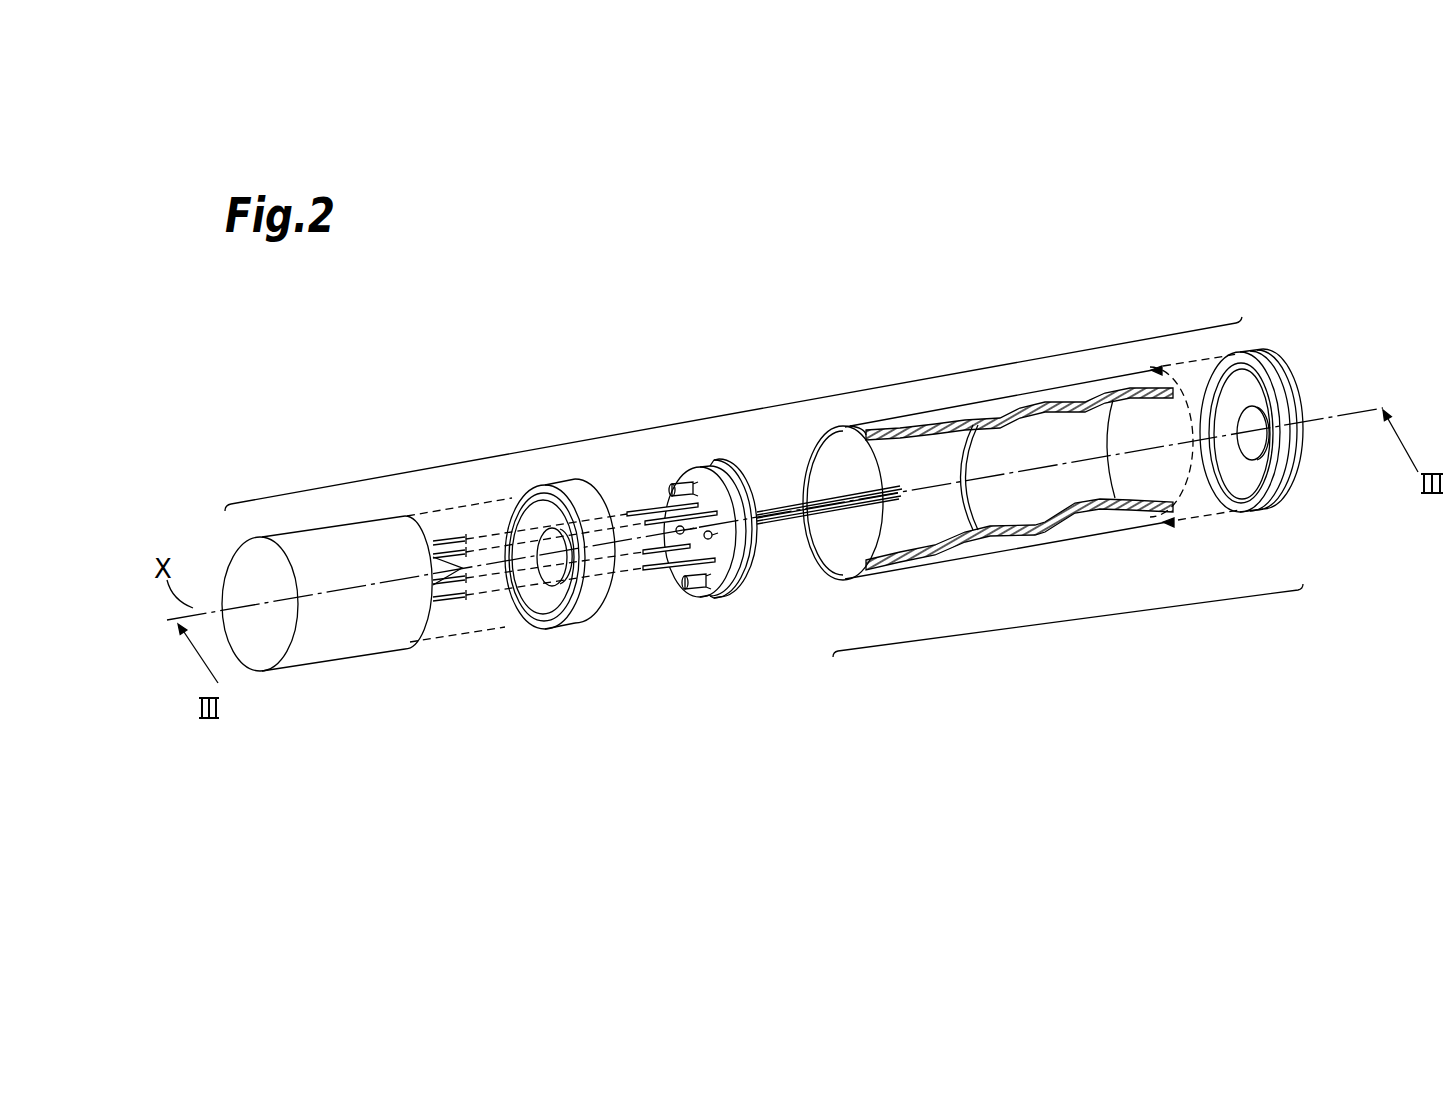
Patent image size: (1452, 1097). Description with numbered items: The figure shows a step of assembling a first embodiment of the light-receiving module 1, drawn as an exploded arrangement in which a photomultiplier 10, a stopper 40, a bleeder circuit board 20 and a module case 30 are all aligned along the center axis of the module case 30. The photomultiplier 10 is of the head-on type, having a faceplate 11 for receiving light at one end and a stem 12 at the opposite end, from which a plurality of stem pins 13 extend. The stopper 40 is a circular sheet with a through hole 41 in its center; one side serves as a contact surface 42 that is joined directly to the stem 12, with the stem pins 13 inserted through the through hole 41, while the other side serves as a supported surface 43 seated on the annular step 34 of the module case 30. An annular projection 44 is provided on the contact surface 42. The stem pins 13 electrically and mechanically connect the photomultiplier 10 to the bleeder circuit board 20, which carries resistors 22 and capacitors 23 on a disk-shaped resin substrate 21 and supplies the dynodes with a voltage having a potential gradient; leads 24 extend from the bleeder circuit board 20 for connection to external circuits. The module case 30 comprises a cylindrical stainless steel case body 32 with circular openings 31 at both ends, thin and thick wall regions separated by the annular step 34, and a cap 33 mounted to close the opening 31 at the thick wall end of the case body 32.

The light-receiving module 1 is at (706, 414).
The photomultiplier 10 is at (345, 646).
The faceplate 11 is at (256, 672).
The stem 12 is at (430, 634).
The stem pins 13 is at (462, 602).
The bleeder circuit board 20 is at (722, 593).
The disk-shaped substrate 21 is at (703, 594).
The resistors 22 is at (716, 537).
The capacitors 23 is at (693, 594).
The leads 24 is at (780, 527).
The module case 30 is at (1083, 622).
The circular openings 31 is at (827, 574).
The case body 32 is at (1032, 543).
The cap 33 is at (1287, 498).
The annular step 34 is at (966, 513).
The stopper 40 is at (611, 620).
The through hole 41 is at (575, 628).
The contact surface 42 is at (527, 628).
The supported surface 43 is at (608, 585).
The annular projection 44 is at (512, 607).